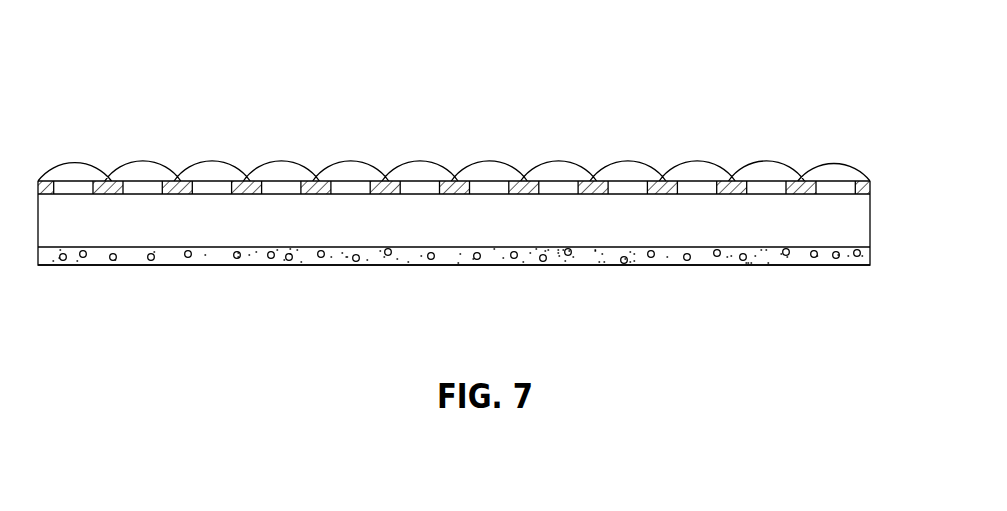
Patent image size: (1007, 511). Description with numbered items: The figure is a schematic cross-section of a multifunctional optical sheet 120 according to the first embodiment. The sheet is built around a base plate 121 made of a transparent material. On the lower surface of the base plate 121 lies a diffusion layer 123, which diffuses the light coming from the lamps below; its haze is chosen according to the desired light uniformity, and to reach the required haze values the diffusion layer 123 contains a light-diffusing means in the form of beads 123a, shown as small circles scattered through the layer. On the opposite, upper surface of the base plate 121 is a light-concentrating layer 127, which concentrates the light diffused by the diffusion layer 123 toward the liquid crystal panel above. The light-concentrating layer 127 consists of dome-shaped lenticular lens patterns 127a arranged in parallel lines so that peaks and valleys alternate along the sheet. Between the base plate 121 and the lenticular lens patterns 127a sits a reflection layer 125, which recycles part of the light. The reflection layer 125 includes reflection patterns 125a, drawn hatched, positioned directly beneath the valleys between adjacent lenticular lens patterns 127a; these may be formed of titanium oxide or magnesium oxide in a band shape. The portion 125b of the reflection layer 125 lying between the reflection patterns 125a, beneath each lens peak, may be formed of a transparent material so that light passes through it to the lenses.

The multifunctional optical sheet 120 is at (801, 84).
The base plate 121 is at (860, 218).
The diffusion layer 123 is at (454, 291).
The beads 123a is at (743, 261).
The reflection layer 125 is at (454, 130).
The reflection patterns 125a is at (731, 182).
The portion of the reflection layer 125b is at (757, 98).
The light-concentrating layer 127 is at (454, 132).
The lenticular lens patterns 127a is at (492, 168).